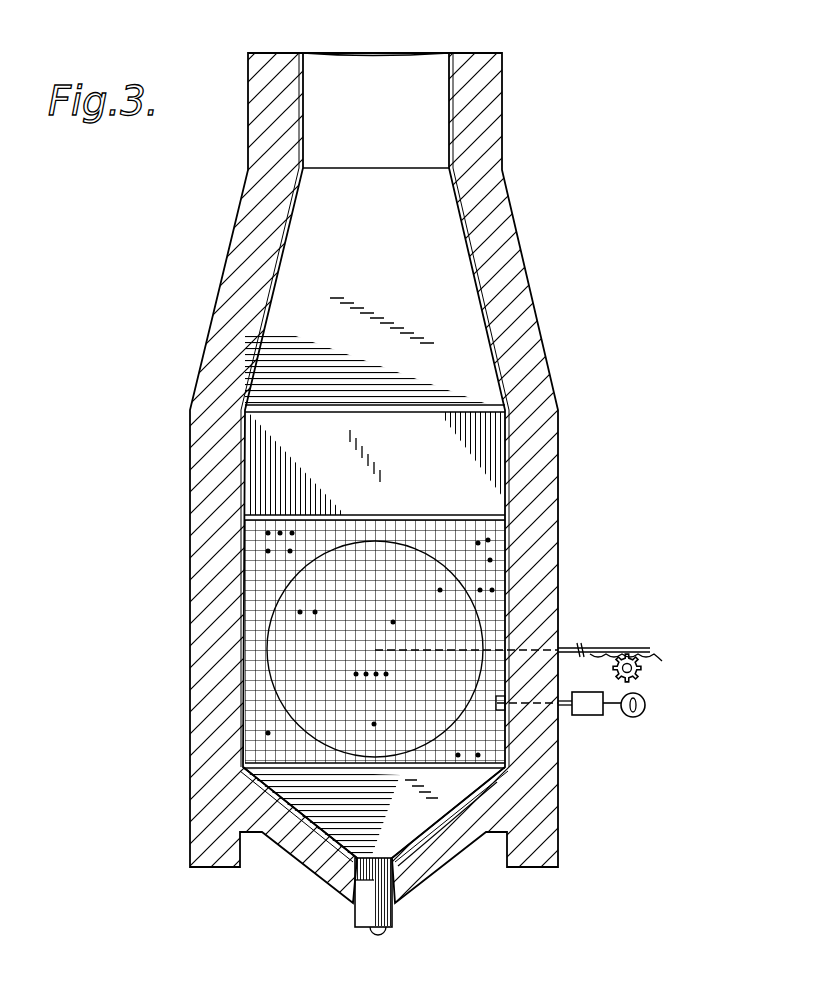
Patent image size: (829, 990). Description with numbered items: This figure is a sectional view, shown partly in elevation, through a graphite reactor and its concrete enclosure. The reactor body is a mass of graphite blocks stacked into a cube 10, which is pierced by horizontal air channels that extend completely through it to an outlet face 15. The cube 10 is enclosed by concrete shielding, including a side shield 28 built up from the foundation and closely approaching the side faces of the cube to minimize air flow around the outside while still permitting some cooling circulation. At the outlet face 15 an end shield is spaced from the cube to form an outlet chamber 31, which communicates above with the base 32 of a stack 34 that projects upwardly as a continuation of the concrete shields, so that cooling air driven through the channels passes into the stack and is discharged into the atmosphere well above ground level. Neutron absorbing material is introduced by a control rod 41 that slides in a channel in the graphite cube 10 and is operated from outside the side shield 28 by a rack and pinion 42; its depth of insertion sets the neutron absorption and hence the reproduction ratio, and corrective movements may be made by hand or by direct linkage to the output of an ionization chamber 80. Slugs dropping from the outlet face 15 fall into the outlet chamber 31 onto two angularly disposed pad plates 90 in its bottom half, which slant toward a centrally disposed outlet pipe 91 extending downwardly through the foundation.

The cube 10 is at (240, 702).
The outlet face 15 is at (482, 565).
The side shield 28 is at (538, 560).
The outlet chamber 31 is at (432, 465).
The base of stack 32 is at (487, 152).
The stack 34 is at (396, 115).
The control rod 41 is at (567, 652).
The rack and pinion 42 is at (652, 661).
The ionization chamber 80 is at (590, 716).
The pad plates 90 is at (310, 830).
The outlet pipe 91 is at (395, 912).